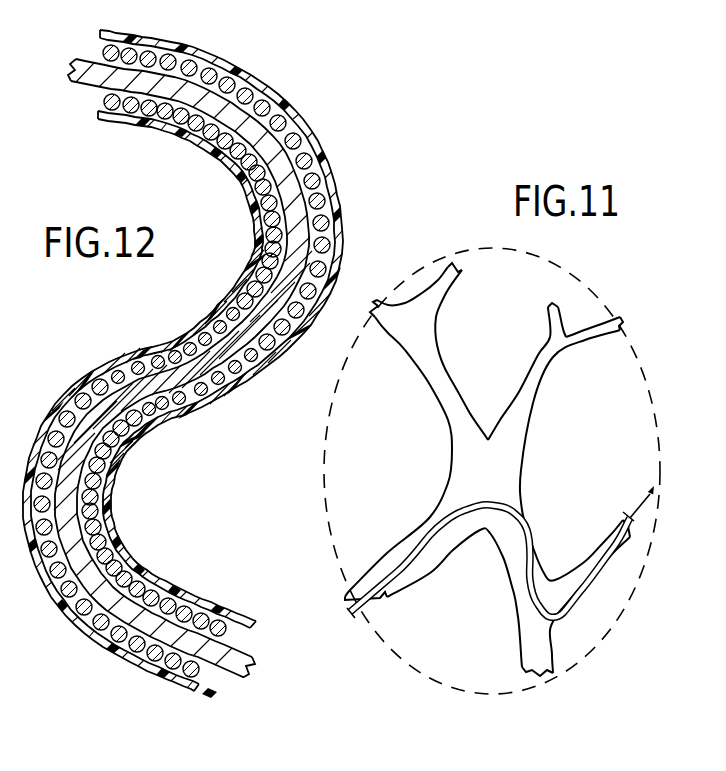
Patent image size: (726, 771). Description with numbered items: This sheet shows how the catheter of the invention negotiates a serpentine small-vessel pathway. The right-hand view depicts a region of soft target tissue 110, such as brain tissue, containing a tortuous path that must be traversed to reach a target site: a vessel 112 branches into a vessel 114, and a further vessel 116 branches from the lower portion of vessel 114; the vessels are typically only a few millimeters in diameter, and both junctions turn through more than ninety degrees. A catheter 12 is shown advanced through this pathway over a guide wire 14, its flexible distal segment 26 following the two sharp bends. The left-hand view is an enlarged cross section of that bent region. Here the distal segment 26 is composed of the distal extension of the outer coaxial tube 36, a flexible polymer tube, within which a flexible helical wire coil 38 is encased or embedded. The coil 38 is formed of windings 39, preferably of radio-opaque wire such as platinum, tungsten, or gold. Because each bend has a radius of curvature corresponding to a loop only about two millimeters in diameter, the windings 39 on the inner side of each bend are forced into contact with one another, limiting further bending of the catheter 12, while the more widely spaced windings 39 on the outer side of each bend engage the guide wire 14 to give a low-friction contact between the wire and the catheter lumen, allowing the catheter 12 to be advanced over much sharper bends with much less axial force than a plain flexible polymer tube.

In FIG. 12, the catheter 12 is at (213, 366).
In FIG. 11, the catheter 12 is at (433, 535).
In FIG. 12, the guide wire 14 is at (237, 665).
In FIG. 12, the distal segment 26 is at (117, 518).
In FIG. 12, the outer coaxial tube 36 is at (340, 202).
In FIG. 12, the helical wire coil 38 is at (268, 98).
In FIG. 12, the windings 39 is at (183, 67).
In FIG. 11, the soft target tissue 110 is at (503, 469).
In FIG. 11, the vessel 112 is at (388, 592).
In FIG. 11, the vessel 114 is at (527, 499).
In FIG. 11, the vessel 116 is at (591, 592).